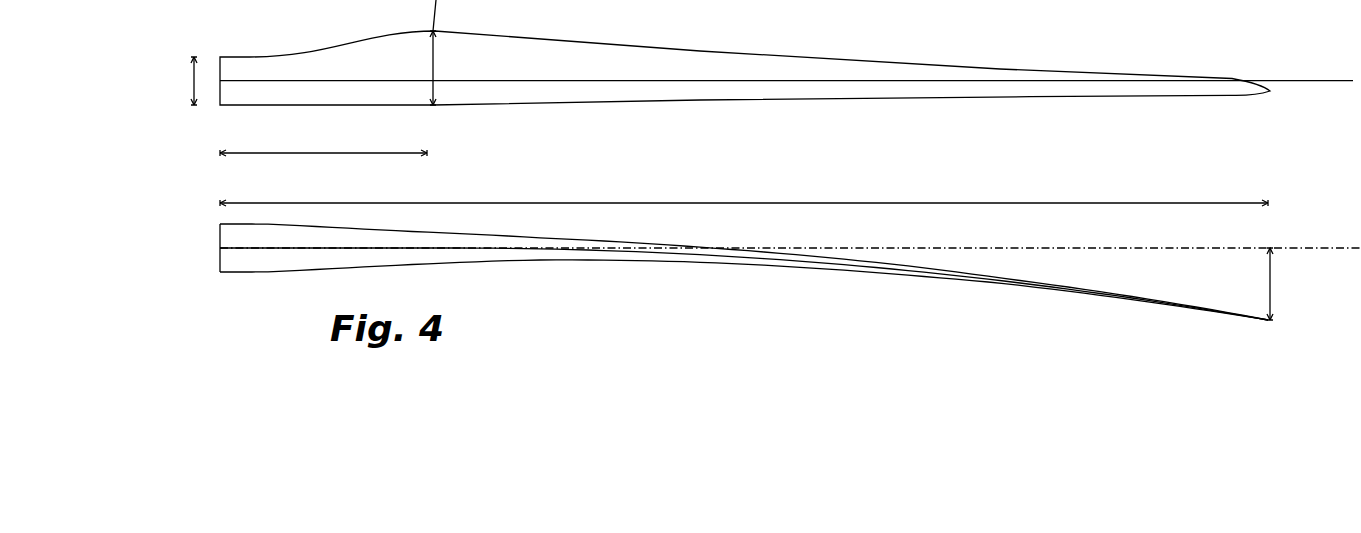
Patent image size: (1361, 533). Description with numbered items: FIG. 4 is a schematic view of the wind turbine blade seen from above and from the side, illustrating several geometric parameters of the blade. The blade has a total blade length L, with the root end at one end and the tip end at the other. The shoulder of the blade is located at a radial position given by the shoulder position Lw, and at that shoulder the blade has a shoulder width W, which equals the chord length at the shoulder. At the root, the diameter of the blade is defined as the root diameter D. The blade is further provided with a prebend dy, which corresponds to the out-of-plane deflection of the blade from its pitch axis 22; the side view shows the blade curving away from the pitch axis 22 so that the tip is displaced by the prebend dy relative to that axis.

The pitch axis 22 is at (637, 80).
The root diameter D is at (186, 81).
The shoulder width W is at (444, 68).
The shoulder position Lw is at (323, 142).
The total blade length L is at (744, 192).
The prebend dy is at (1285, 284).